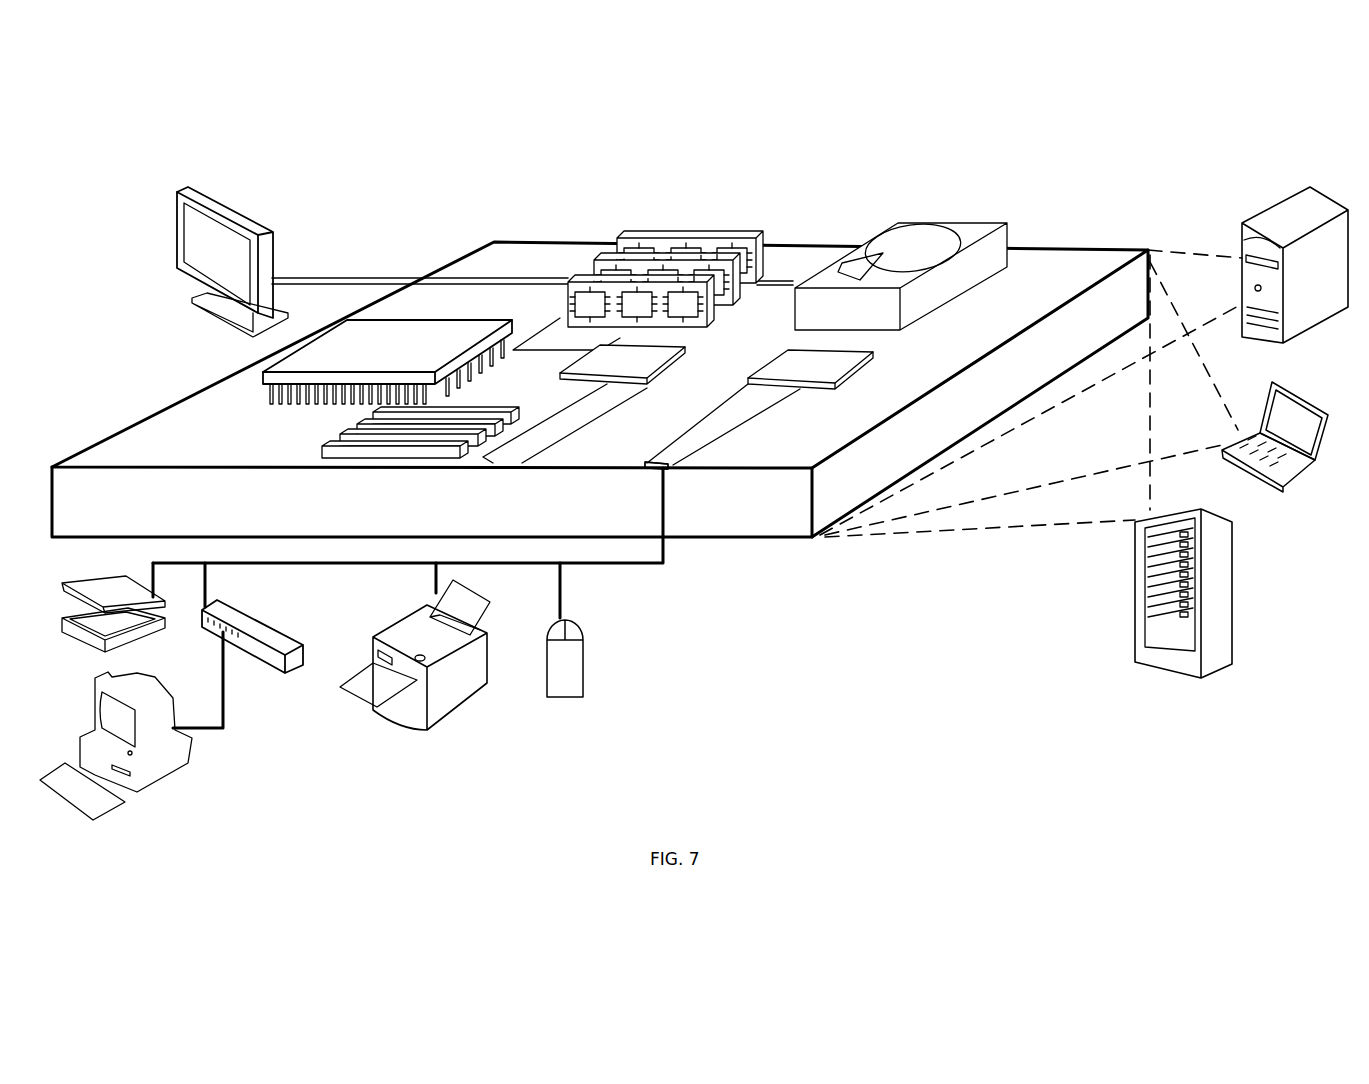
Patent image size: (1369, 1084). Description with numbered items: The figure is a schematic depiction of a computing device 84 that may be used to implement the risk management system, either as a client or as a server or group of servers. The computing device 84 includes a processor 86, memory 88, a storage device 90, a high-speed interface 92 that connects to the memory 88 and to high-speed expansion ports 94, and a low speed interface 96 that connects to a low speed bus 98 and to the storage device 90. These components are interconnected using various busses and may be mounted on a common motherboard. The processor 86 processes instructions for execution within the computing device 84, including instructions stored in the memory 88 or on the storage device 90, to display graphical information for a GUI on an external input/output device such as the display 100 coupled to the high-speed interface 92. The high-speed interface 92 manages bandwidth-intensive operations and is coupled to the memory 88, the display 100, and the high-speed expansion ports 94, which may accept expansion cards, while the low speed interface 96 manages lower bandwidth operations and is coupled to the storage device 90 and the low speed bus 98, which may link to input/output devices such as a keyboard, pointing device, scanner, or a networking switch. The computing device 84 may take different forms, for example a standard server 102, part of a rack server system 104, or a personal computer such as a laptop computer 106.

The computing device 84 is at (404, 211).
The processor 86 is at (263, 380).
The memory 88 is at (636, 233).
The storage device 90 is at (897, 223).
The high-speed interface 92 is at (603, 365).
The high-speed expansion ports 94 is at (347, 428).
The low speed interface 96 is at (810, 363).
The low speed bus 98 is at (677, 472).
The display 100 is at (175, 193).
The desktop computer 102 is at (1242, 232).
The rack server system 104 is at (1135, 600).
The laptop computer 106 is at (1272, 384).